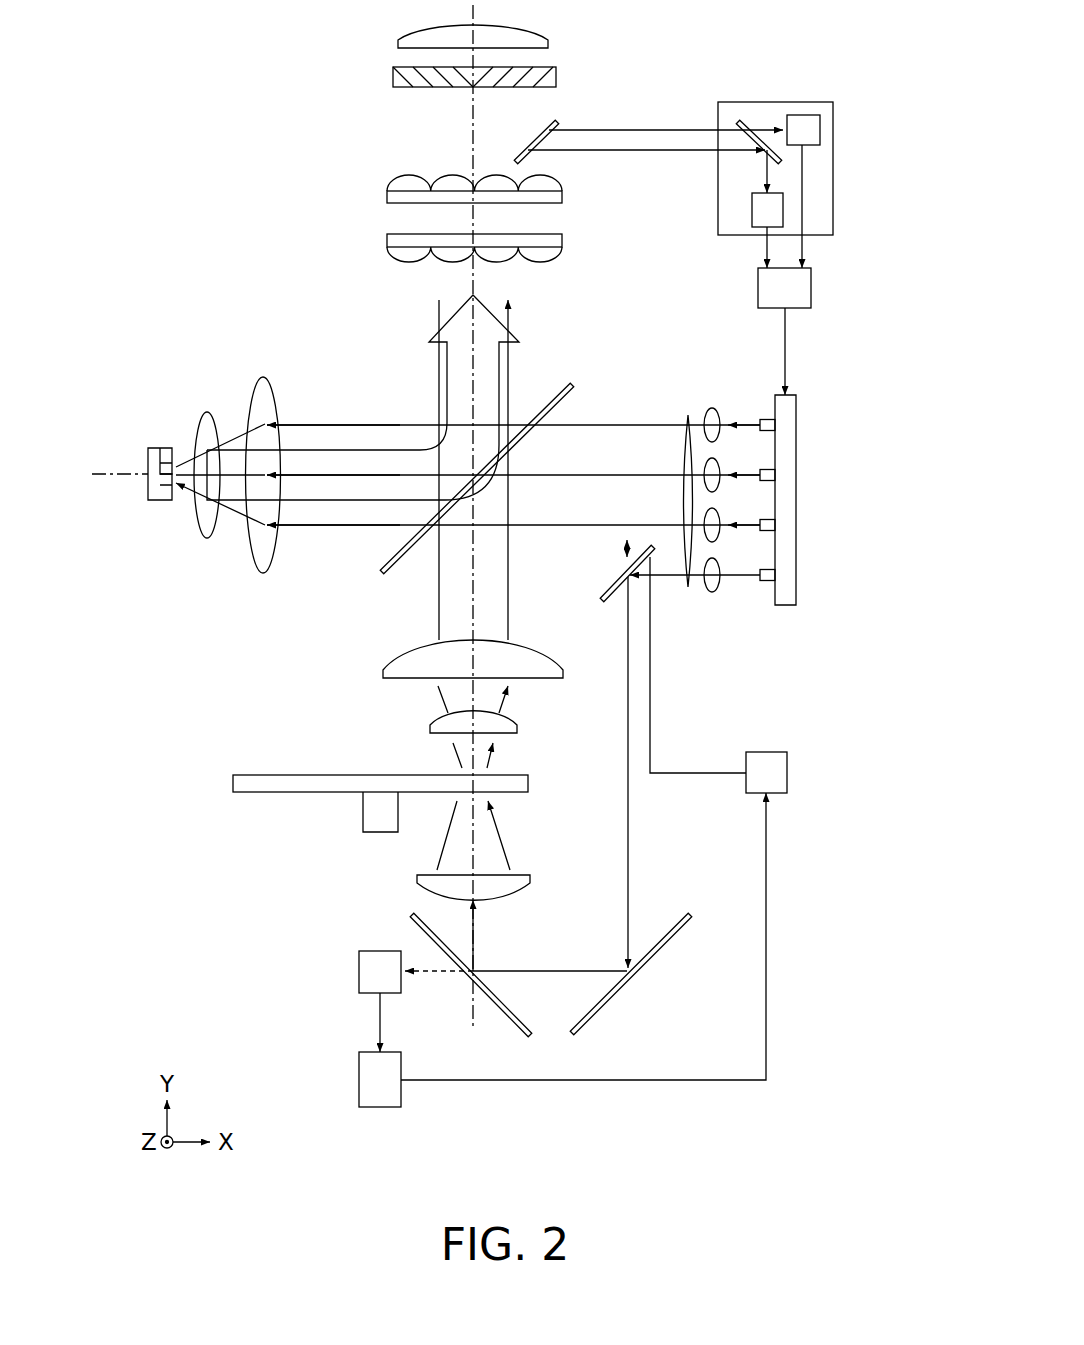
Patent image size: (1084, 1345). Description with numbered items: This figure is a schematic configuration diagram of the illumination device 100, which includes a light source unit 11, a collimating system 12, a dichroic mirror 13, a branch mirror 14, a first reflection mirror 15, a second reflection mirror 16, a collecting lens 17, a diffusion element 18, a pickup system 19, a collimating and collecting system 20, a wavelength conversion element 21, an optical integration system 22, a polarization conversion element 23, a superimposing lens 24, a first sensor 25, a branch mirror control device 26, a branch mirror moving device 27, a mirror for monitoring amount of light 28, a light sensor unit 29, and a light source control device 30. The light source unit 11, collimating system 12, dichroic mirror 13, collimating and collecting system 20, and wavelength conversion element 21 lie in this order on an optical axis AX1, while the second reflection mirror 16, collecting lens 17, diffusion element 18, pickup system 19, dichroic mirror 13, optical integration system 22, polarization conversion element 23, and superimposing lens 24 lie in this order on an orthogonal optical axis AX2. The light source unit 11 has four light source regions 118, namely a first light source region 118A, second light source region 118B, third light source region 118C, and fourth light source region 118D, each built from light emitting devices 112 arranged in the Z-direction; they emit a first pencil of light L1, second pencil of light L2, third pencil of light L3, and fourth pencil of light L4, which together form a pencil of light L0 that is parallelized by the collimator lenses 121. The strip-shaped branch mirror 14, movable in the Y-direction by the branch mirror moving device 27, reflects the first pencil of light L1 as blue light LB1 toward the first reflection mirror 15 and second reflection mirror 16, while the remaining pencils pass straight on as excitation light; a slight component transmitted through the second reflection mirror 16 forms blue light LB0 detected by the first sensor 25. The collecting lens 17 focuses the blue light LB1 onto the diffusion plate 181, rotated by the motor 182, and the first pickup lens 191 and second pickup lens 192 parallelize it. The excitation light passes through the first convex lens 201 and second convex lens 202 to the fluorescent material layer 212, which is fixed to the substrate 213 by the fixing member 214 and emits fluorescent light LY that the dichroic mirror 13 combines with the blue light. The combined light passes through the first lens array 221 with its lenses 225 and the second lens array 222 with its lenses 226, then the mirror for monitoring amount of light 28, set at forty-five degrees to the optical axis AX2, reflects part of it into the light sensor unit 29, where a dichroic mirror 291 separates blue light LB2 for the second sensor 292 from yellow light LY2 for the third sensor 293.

The illumination device 100 is at (212, 105).
The light source unit 11 is at (817, 525).
The light source region 118 is at (844, 501).
The first light source region 118A is at (787, 575).
The second light source region 118B is at (787, 525).
The third light source region 118C is at (787, 474).
The fourth light source region 118D is at (787, 424).
The light emitting device 112 is at (760, 572).
The collimating system 12 is at (703, 515).
The collimator lens 121 is at (710, 409).
The dichroic mirror 13 is at (572, 386).
The branch mirror 14 is at (612, 590).
The first reflection mirror 15 is at (610, 1002).
The second reflection mirror 16 is at (501, 1010).
The collecting lens 17 is at (530, 885).
The diffusion element 18 is at (416, 828).
The diffusion plate 181 is at (528, 783).
The motor 182 is at (378, 832).
The pickup system 19 is at (405, 686).
The first pickup lens 191 is at (432, 724).
The second pickup lens 192 is at (395, 655).
The collimating and collecting system 20 is at (237, 423).
The first convex lens 201 is at (263, 378).
The second convex lens 202 is at (210, 427).
The wavelength conversion element 21 is at (151, 425).
The fluorescent material layer 212 is at (166, 464).
The substrate 213 is at (150, 450).
The fixing member 214 is at (166, 487).
The optical integration system 22 is at (402, 220).
The first lens array 221 is at (427, 262).
The second lens array 222 is at (427, 174).
The lens 225 is at (410, 262).
The lens 226 is at (410, 178).
The polarization conversion element 23 is at (393, 77).
The superimposing lens 24 is at (400, 44).
The first sensor 25 is at (359, 972).
The branch mirror control device 26 is at (359, 1077).
The branch mirror moving device 27 is at (787, 772).
The mirror for monitoring amount of light 28 is at (557, 122).
The light sensor unit 29 is at (833, 102).
The dichroic mirror 291 is at (742, 122).
The second sensor 292 is at (820, 125).
The third sensor 293 is at (752, 217).
The light source control device 30 is at (811, 283).
The blue light LB0 is at (432, 975).
The blue light LB1 is at (632, 835).
The blue light LB2 is at (765, 128).
The fluorescent light LY is at (323, 501).
The yellow light LY2 is at (766, 172).
The pencil of light L0 is at (683, 414).
The first pencil of light L1 is at (665, 578).
The second pencil of light L2 is at (660, 525).
The third pencil of light L3 is at (660, 475).
The fourth pencil of light L4 is at (660, 424).
The optical axis AX1 is at (103, 480).
The optical axis AX2 is at (477, 282).